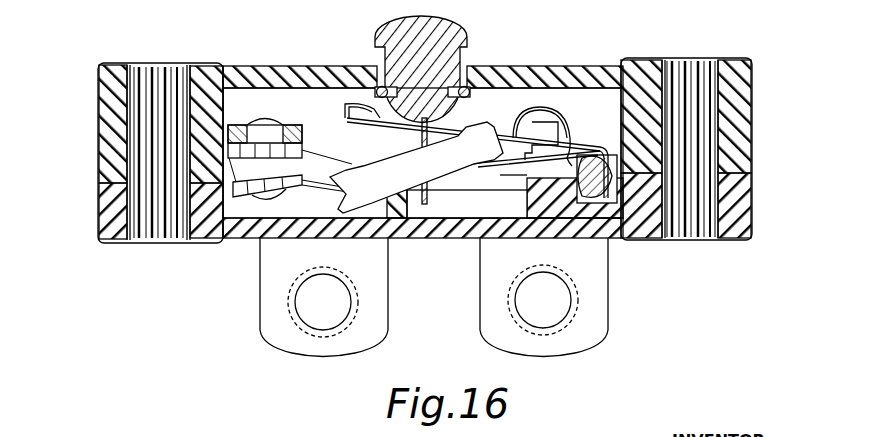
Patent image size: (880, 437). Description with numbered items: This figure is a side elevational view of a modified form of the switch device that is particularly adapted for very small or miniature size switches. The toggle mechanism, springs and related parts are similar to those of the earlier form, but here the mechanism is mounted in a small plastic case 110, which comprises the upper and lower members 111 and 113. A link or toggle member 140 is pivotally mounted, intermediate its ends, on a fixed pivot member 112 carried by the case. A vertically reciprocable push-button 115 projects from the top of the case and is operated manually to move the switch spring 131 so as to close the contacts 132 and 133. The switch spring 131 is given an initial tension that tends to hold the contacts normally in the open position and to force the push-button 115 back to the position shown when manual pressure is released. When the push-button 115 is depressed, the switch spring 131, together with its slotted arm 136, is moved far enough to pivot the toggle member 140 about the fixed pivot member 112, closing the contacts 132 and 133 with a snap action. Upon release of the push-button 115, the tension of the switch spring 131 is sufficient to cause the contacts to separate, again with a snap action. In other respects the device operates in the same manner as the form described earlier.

The plastic case 110 is at (750, 172).
The lower member 111 is at (748, 207).
The fixed pivot member 112 is at (405, 237).
The upper member 113 is at (748, 130).
The push-button 115 is at (470, 35).
The switch spring 131 is at (348, 105).
The contact 132 is at (304, 141).
The contact 133 is at (290, 191).
The slotted arm 136 is at (430, 193).
The toggle member 140 is at (403, 166).